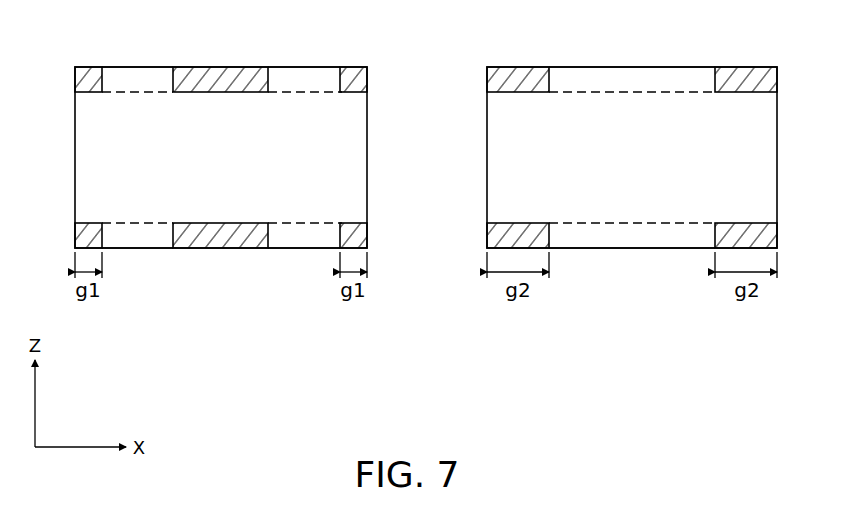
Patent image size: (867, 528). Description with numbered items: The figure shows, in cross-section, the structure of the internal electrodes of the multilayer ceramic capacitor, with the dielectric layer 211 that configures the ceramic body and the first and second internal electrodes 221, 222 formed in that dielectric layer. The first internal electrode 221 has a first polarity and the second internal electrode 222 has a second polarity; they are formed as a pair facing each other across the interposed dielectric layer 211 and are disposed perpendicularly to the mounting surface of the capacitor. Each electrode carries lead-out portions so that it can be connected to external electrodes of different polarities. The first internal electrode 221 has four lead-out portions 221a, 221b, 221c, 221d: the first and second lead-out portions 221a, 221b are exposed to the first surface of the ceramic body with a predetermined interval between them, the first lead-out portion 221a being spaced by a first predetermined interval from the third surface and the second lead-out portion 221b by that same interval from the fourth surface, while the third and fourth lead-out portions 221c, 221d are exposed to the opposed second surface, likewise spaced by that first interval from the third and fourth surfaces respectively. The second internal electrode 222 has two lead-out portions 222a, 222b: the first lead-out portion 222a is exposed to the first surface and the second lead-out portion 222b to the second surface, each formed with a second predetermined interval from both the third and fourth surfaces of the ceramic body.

The dielectric layer 211 is at (225, 76).
The first internal electrode 221 is at (167, 103).
The first lead-out portion of the first internal electrode 221a is at (152, 238).
The second lead-out portion of the first internal electrode 221b is at (292, 238).
The third lead-out portion of the first internal electrode 221c is at (110, 78).
The fourth lead-out portion of the first internal electrode 221d is at (309, 78).
The second internal electrode 222 is at (590, 103).
The first lead-out portion of the second internal electrode 222a is at (635, 238).
The second lead-out portion of the second internal electrode 222b is at (668, 78).